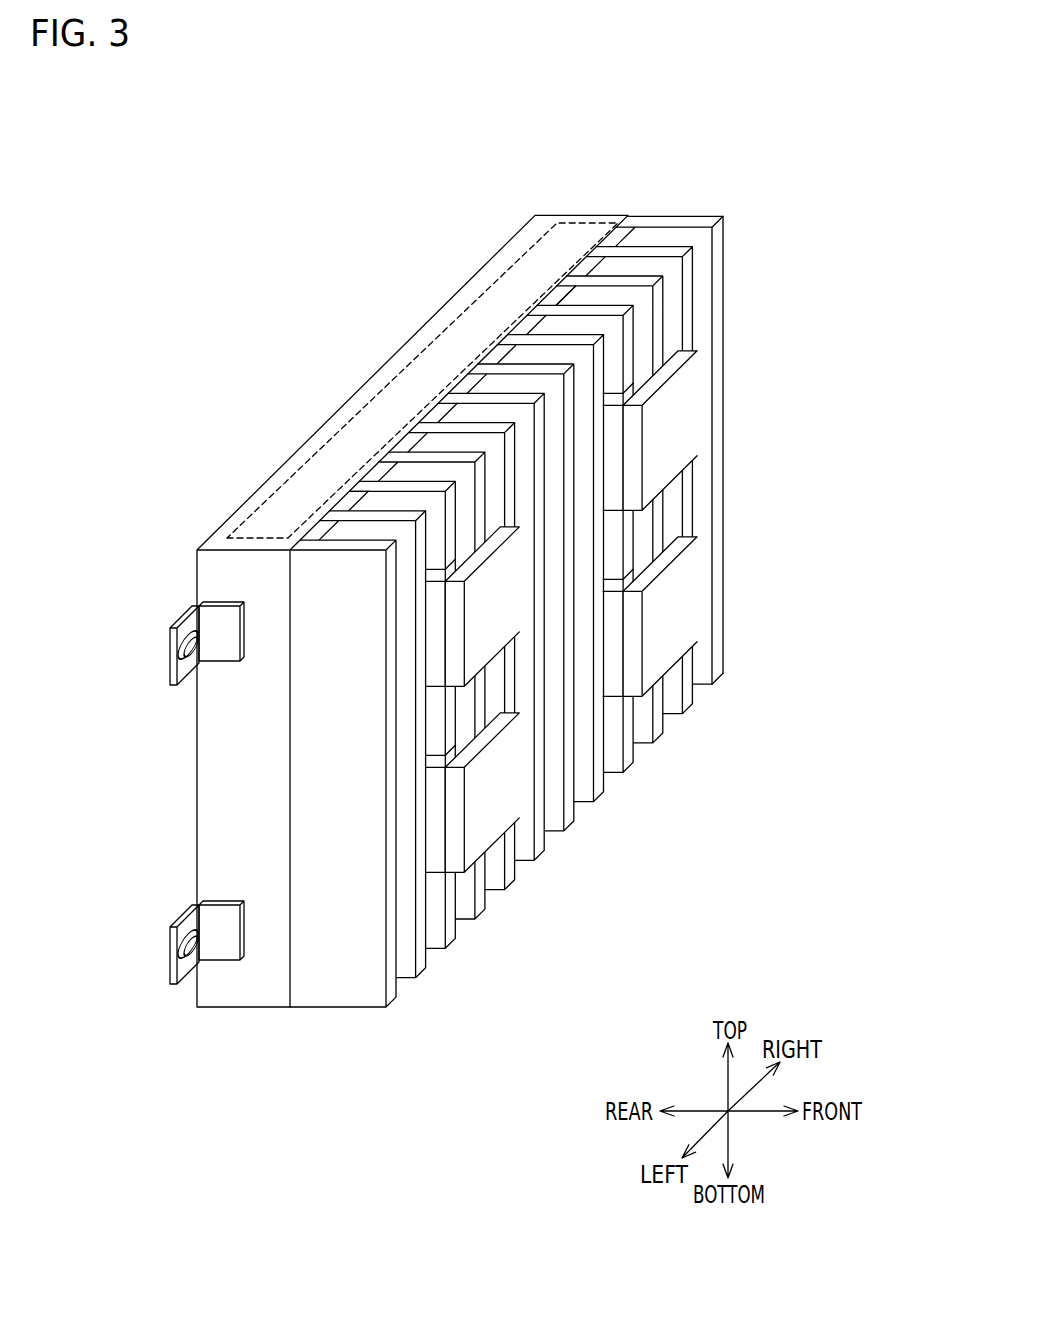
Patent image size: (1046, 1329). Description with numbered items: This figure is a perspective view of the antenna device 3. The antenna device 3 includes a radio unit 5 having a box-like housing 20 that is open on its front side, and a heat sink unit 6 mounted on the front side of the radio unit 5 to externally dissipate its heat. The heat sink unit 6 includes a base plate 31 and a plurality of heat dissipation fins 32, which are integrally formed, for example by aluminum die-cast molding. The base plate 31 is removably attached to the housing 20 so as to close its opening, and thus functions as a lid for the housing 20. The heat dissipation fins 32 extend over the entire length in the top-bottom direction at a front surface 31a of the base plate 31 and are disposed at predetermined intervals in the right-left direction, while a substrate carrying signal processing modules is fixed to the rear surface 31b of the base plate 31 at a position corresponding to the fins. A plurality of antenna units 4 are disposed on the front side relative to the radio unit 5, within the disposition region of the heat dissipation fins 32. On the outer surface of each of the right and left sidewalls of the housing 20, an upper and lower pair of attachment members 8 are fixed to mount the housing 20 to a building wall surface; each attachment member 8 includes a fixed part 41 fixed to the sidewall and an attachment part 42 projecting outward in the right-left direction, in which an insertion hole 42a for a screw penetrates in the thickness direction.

The antenna device 3 is at (465, 561).
The antenna unit 4 is at (675, 607).
The radio unit 5 is at (412, 568).
The heat sink unit 6 is at (672, 406).
The attachment member 8 is at (167, 795).
The housing 20 is at (585, 222).
The base plate 31 is at (545, 626).
The front surface 31a is at (548, 326).
The rear surface 31b is at (348, 492).
The heat dissipation fin 32 is at (673, 243).
The fixed part 41 is at (222, 638).
The attachment part 42 is at (193, 620).
The insertion hole 42a is at (195, 663).